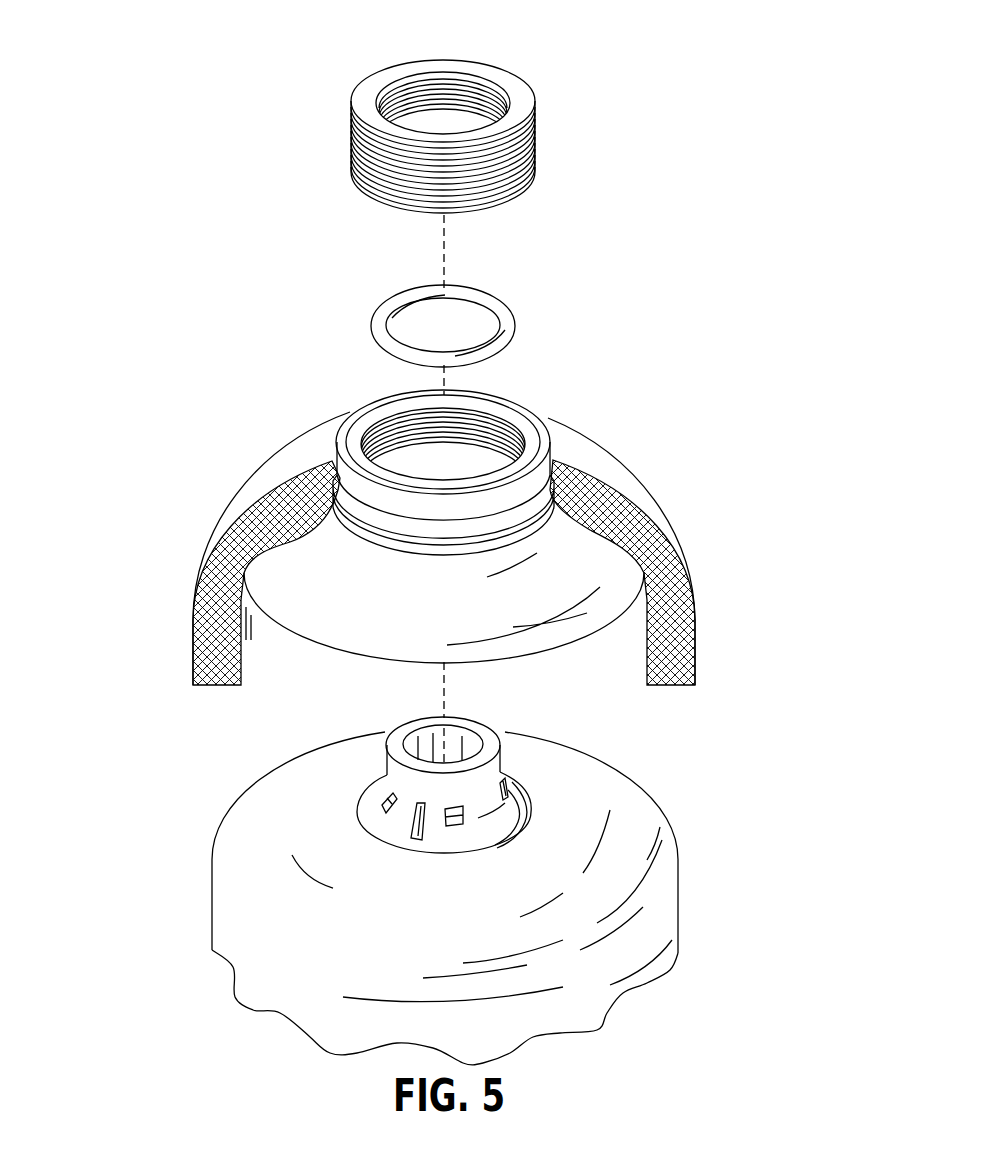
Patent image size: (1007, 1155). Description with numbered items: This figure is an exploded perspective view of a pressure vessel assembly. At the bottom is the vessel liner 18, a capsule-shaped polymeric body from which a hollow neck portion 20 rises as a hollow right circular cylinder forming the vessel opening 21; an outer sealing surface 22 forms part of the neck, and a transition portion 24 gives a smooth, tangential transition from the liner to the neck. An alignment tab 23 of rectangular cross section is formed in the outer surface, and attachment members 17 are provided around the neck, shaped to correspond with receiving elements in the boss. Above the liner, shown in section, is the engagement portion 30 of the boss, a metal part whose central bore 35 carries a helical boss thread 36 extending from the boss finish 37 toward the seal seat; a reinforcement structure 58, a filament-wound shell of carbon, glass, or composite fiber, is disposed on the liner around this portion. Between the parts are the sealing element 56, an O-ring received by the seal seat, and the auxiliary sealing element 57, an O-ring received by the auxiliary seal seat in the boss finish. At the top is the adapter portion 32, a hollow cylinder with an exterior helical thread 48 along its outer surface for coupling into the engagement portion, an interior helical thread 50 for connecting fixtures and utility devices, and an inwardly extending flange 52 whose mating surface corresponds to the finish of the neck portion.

The attachment members 17 is at (380, 799).
The vessel liner 18 is at (592, 770).
The hollow neck portion 20 is at (386, 775).
The vessel opening 21 is at (473, 737).
The outer sealing surface 22 is at (487, 779).
The alignment tab 23 is at (417, 826).
The transition portion 24 is at (382, 827).
The engagement portion 30 is at (313, 470).
The adapter portion 32 is at (473, 114).
The central bore 35 is at (367, 437).
The helical boss thread 36 is at (448, 452).
The boss finish 37 is at (587, 437).
The exterior helical thread 48 is at (537, 137).
The interior helical thread 50 is at (402, 82).
The flange 52 is at (418, 125).
The sealing element 56 is at (495, 302).
The auxiliary sealing element 57 is at (530, 413).
The reinforcement structure 58 is at (598, 465).